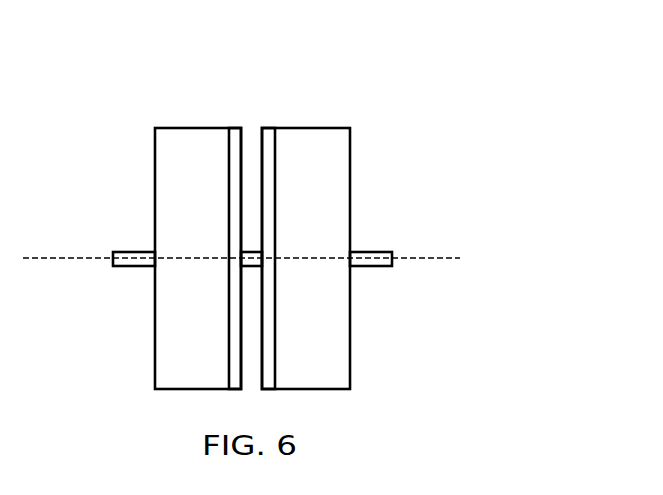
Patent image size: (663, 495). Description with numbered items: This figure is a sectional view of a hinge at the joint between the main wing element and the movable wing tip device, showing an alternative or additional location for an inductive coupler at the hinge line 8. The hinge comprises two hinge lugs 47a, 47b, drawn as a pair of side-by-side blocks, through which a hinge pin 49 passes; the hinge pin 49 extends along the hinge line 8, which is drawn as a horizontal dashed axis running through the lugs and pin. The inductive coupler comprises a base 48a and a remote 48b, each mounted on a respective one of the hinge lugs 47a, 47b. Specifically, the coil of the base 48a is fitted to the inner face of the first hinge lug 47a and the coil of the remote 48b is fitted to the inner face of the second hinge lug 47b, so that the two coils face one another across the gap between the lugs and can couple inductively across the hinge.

The hinge line 8 is at (419, 257).
The hinge pin 49 is at (125, 251).
The hinge lug 47a is at (153, 189).
The hinge lug 47b is at (352, 148).
The base 48a is at (236, 127).
The remote 48b is at (268, 127).